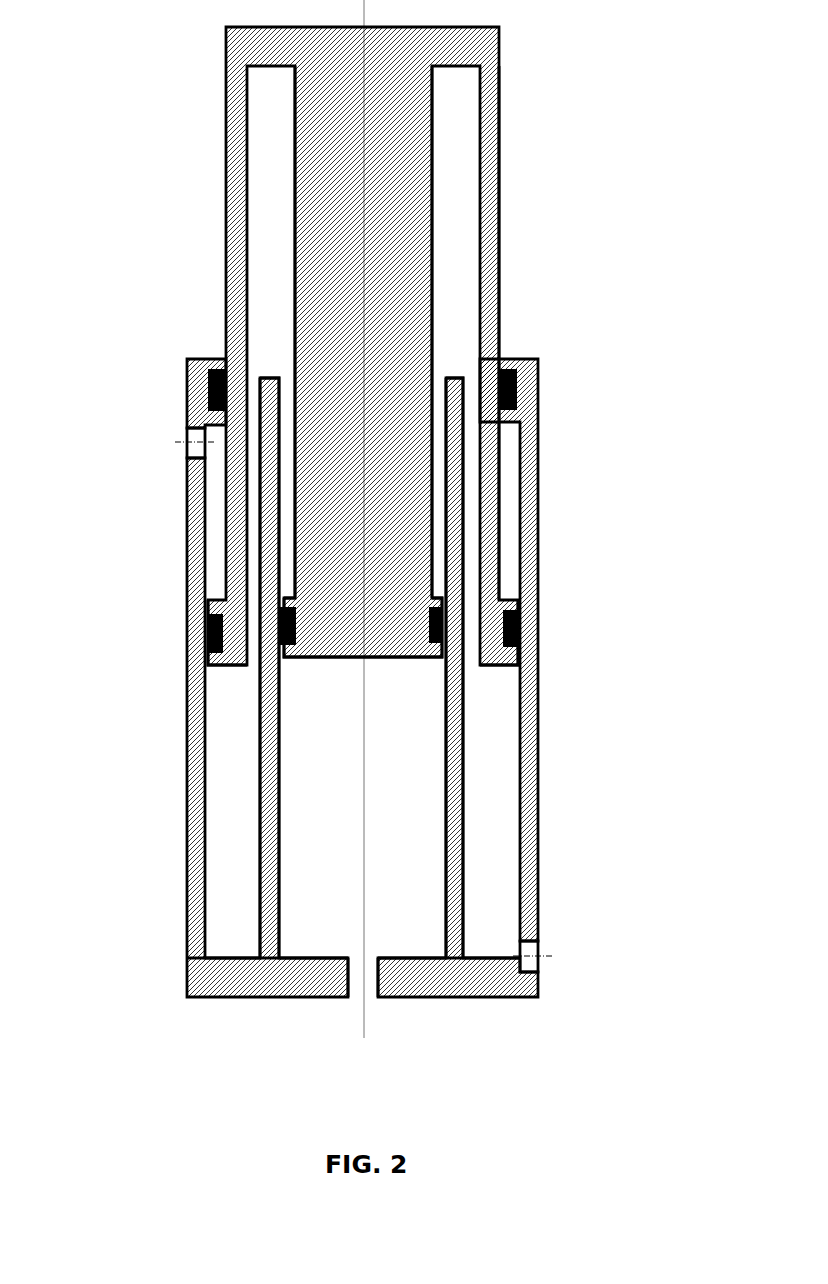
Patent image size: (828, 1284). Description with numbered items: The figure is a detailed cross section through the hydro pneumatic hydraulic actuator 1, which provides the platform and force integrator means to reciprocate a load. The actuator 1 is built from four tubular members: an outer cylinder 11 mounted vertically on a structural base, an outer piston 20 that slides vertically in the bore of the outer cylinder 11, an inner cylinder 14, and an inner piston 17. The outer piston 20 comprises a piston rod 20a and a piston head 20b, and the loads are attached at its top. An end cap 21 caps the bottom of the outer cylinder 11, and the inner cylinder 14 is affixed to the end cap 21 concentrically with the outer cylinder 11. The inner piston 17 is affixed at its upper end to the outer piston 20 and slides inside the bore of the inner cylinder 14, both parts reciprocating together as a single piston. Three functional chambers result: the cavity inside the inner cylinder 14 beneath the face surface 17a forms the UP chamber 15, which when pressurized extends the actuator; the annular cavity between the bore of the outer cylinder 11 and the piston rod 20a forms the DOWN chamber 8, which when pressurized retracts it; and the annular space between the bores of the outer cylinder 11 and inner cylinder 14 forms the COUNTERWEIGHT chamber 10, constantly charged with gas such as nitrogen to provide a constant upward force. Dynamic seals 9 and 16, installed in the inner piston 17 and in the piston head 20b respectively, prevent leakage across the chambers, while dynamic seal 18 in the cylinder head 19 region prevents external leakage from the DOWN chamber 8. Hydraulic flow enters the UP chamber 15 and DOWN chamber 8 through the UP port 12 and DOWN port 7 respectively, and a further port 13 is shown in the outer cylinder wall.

The hydraulic actuator 1 is at (366, 721).
The DOWN port 7 is at (197, 437).
The DOWN chamber 8 is at (217, 540).
The dynamic seal 9 is at (267, 648).
The COUNTERWEIGHT chamber 10 is at (223, 807).
The outer cylinder 11 is at (197, 877).
The UP port 12 is at (358, 985).
The side port 13 is at (537, 947).
The inner cylinder 14 is at (457, 903).
The UP chamber 15 is at (383, 830).
The dynamic seal 16 is at (522, 632).
The inner piston 17 is at (387, 483).
The face surface 17a is at (327, 658).
The dynamic seal 18 is at (538, 402).
The cylinder head 19 is at (538, 373).
The outer piston 20 is at (370, 394).
The piston rod 20a is at (500, 252).
The piston head 20b is at (488, 650).
The end cap 21 is at (468, 983).